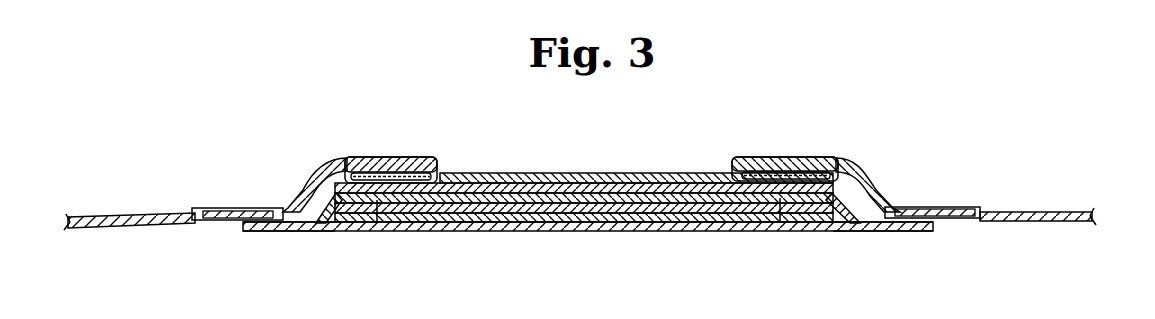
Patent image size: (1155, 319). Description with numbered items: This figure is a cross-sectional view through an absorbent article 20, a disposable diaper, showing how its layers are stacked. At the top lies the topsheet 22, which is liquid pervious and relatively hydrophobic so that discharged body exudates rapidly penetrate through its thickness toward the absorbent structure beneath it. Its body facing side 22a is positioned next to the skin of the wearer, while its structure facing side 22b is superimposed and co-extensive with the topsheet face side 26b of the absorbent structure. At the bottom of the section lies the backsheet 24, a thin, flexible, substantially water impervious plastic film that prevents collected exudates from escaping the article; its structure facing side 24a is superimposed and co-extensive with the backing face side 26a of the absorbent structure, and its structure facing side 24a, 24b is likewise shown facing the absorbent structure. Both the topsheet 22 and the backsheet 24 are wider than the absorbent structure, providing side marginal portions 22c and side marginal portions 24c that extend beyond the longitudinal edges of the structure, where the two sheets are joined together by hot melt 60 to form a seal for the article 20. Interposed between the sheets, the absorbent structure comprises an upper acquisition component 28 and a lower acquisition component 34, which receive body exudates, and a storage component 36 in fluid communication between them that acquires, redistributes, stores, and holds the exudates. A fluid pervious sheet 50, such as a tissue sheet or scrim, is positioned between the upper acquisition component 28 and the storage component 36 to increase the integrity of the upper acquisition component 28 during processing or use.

The absorbent article 20 is at (821, 138).
The topsheet 22 is at (770, 158).
The body facing side 22a is at (473, 173).
The structure facing side 22b is at (492, 185).
The side marginal portions 22c is at (202, 210).
The backsheet 24 is at (728, 228).
The structure facing side 24a is at (533, 231).
The lower electrode base plate 24b is at (460, 231).
The side marginal portions 24c is at (277, 233).
The backing face side 26a is at (380, 233).
The topsheet face side 26b is at (643, 175).
The upper acquisition component 28 is at (571, 185).
The lower acquisition component 34 is at (657, 228).
The storage component 36 is at (595, 228).
The fluid pervious sheet 50 is at (778, 224).
The hot melt 60 is at (250, 212).